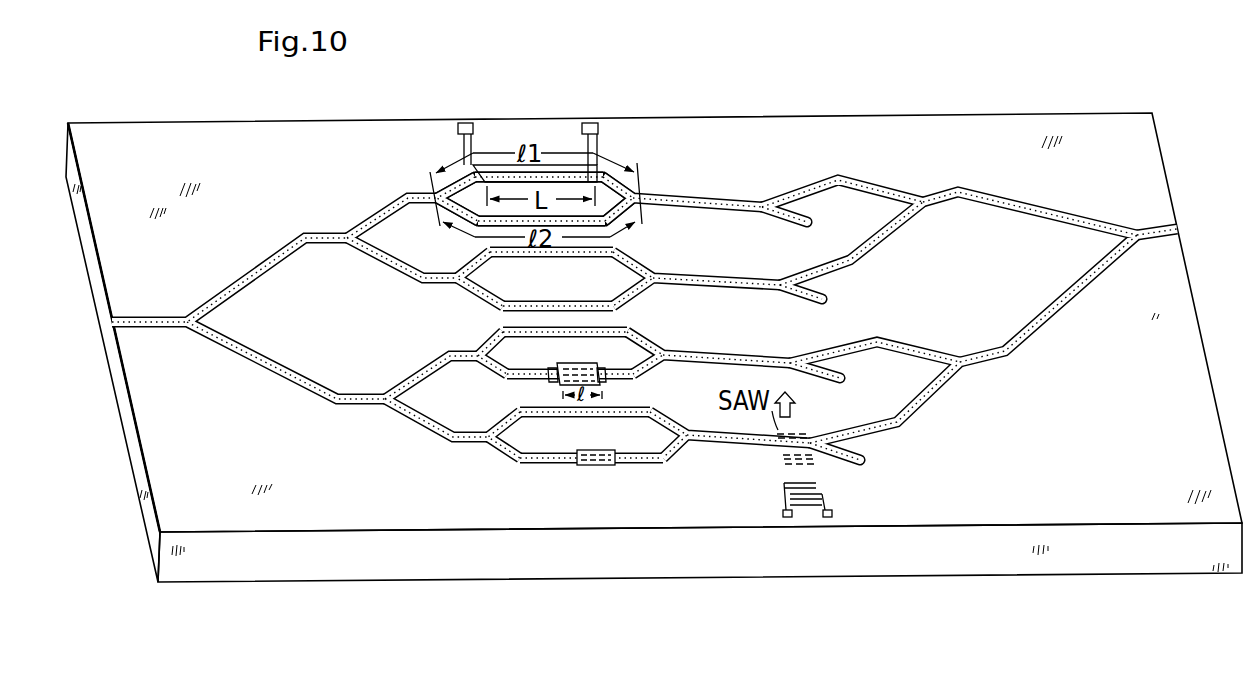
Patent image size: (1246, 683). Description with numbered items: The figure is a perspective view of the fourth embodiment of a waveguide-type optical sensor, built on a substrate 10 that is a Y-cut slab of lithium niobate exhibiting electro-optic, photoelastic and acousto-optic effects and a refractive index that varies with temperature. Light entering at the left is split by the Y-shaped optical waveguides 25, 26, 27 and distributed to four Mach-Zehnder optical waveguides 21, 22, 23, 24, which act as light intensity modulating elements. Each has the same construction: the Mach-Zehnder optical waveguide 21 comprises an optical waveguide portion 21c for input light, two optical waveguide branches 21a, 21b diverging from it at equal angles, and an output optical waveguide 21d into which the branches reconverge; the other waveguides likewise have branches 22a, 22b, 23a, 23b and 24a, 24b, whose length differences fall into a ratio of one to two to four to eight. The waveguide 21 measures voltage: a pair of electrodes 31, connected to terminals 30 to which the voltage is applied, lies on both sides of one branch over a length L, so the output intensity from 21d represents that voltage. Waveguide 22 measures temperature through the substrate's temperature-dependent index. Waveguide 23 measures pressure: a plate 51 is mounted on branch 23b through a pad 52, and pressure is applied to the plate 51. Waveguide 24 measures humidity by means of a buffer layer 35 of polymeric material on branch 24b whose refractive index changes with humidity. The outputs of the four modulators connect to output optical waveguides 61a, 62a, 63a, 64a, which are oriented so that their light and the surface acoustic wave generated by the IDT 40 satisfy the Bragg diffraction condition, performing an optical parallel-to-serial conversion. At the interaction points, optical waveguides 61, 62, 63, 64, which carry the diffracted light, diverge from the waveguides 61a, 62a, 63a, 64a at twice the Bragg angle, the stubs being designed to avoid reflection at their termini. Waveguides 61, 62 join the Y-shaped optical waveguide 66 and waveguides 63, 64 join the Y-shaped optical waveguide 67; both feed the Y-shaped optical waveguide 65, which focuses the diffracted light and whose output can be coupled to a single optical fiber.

The substrate 10 is at (903, 574).
The Mach-Zehnder optical waveguide 21 is at (641, 178).
The optical waveguide branch 21a is at (567, 176).
The optical waveguide branch 21b is at (487, 227).
The optical waveguide portion for input light 21c is at (417, 195).
The output optical waveguide 21d is at (667, 196).
The Mach-Zehnder optical waveguide 22 is at (648, 262).
The optical waveguide branch 22a is at (525, 257).
The optical waveguide branch 22b is at (578, 302).
The Mach-Zehnder optical waveguide 23 is at (666, 344).
The optical waveguide branch 23a is at (610, 330).
The optical waveguide branch 23b is at (627, 377).
The Mach-Zehnder optical waveguide 24 is at (683, 406).
The optical waveguide branch 24a is at (596, 413).
The optical waveguide branch 24b is at (643, 461).
The Y-shaped optical waveguide 25 is at (185, 334).
The Y-shaped optical waveguide 26 is at (341, 230).
The Y-shaped optical waveguide 27 is at (381, 408).
The terminals 30 is at (465, 122).
The electrodes 31 is at (505, 186).
The buffer layer 35 is at (587, 466).
The IDT 40 is at (832, 498).
The plate 51 is at (565, 362).
The pad 52 is at (552, 378).
The optical waveguide 61 is at (797, 190).
The output optical waveguide 61a is at (785, 220).
The optical waveguide 62 is at (817, 272).
The output optical waveguide 62a is at (808, 299).
The optical waveguide 63 is at (828, 350).
The output optical waveguide 63a is at (832, 381).
The optical waveguide 64 is at (865, 421).
The output optical waveguide 64a is at (837, 461).
The Y-shaped optical waveguide 65 is at (1136, 228).
The Y-shaped optical waveguide 66 is at (927, 195).
The Y-shaped optical waveguide 67 is at (966, 356).